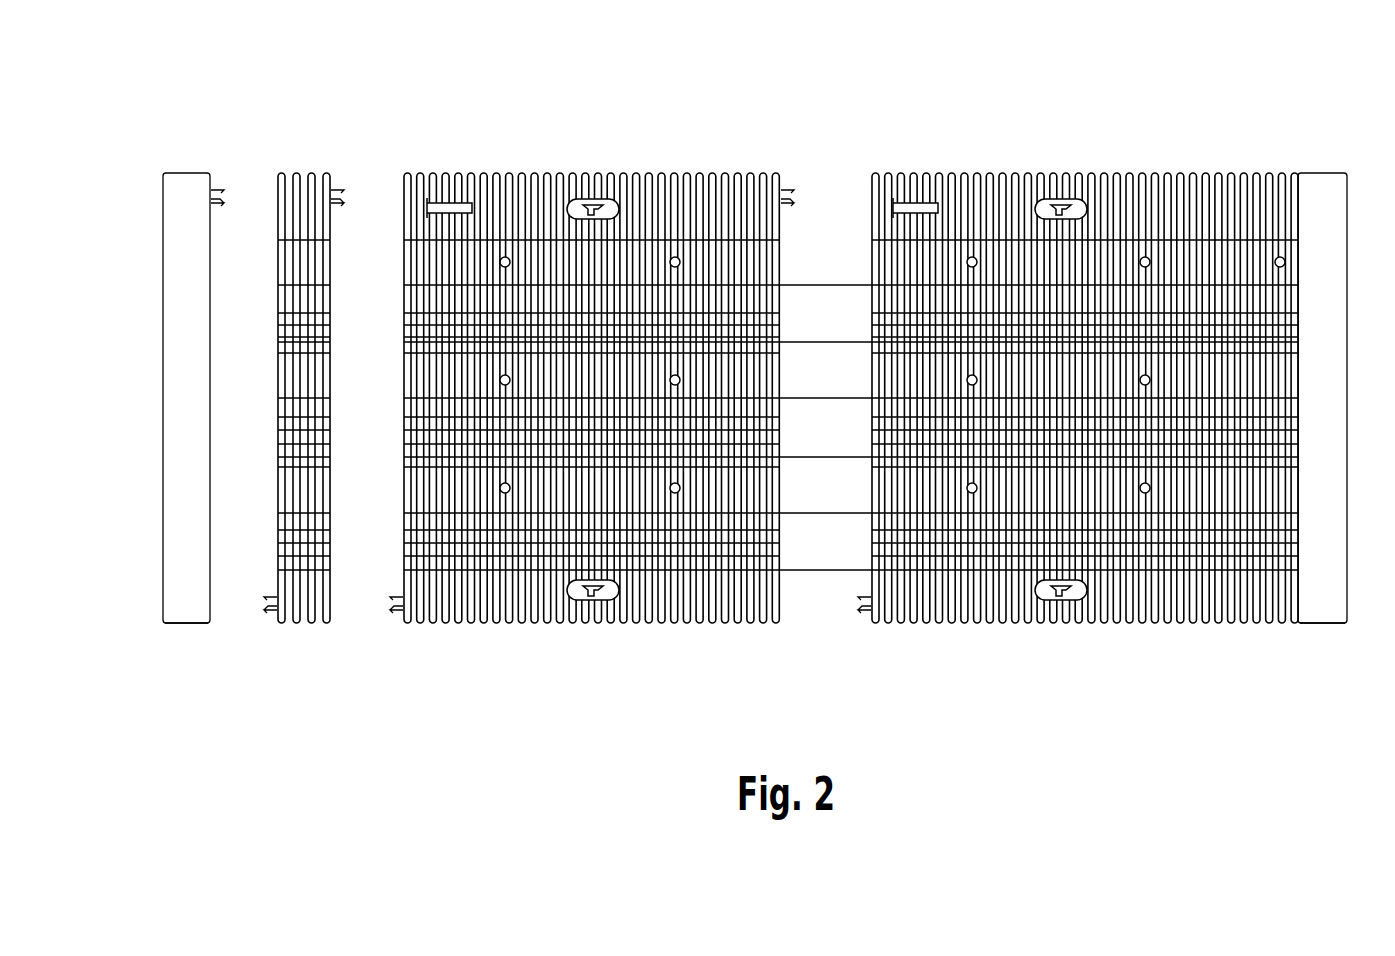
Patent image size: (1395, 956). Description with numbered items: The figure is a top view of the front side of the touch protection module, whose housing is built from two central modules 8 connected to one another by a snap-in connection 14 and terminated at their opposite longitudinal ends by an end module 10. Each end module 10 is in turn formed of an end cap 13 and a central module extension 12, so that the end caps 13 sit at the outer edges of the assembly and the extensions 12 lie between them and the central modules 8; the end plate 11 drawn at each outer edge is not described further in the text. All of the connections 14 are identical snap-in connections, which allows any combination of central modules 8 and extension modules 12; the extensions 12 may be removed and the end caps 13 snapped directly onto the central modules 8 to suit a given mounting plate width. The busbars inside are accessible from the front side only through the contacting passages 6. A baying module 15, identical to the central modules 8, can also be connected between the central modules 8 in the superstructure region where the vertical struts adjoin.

The contacting passage 6 is at (479, 238).
The central module 8 is at (554, 188).
The end module 10 is at (163, 102).
The end plate 11 is at (150, 575).
The central module extension 12 is at (302, 622).
The end cap 13 is at (190, 622).
The snap-in connection 14 is at (220, 190).
The baying module 15 is at (828, 308).